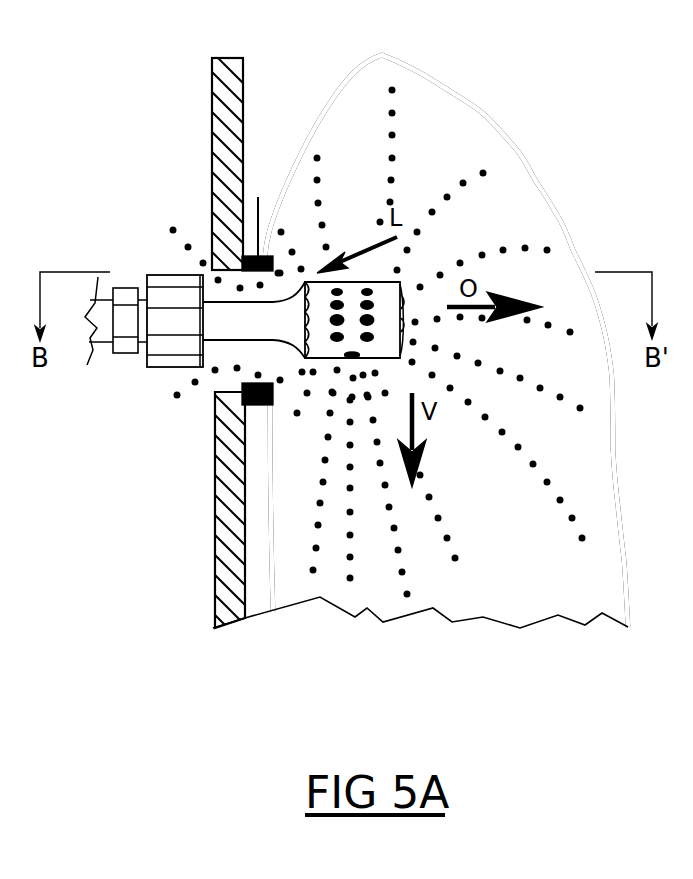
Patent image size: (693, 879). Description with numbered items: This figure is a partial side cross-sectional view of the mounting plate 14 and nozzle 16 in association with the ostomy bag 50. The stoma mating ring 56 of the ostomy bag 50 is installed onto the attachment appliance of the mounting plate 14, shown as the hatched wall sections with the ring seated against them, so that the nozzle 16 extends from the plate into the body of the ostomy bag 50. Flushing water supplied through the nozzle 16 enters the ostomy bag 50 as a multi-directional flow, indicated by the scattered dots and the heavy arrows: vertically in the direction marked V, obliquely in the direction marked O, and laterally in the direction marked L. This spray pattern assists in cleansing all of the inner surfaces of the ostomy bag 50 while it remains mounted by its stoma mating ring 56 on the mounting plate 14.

The mounting plate 14 is at (213, 527).
The nozzle 16 is at (170, 259).
The ostomy bag 50 is at (522, 134).
The stoma mating ring 56 is at (253, 204).